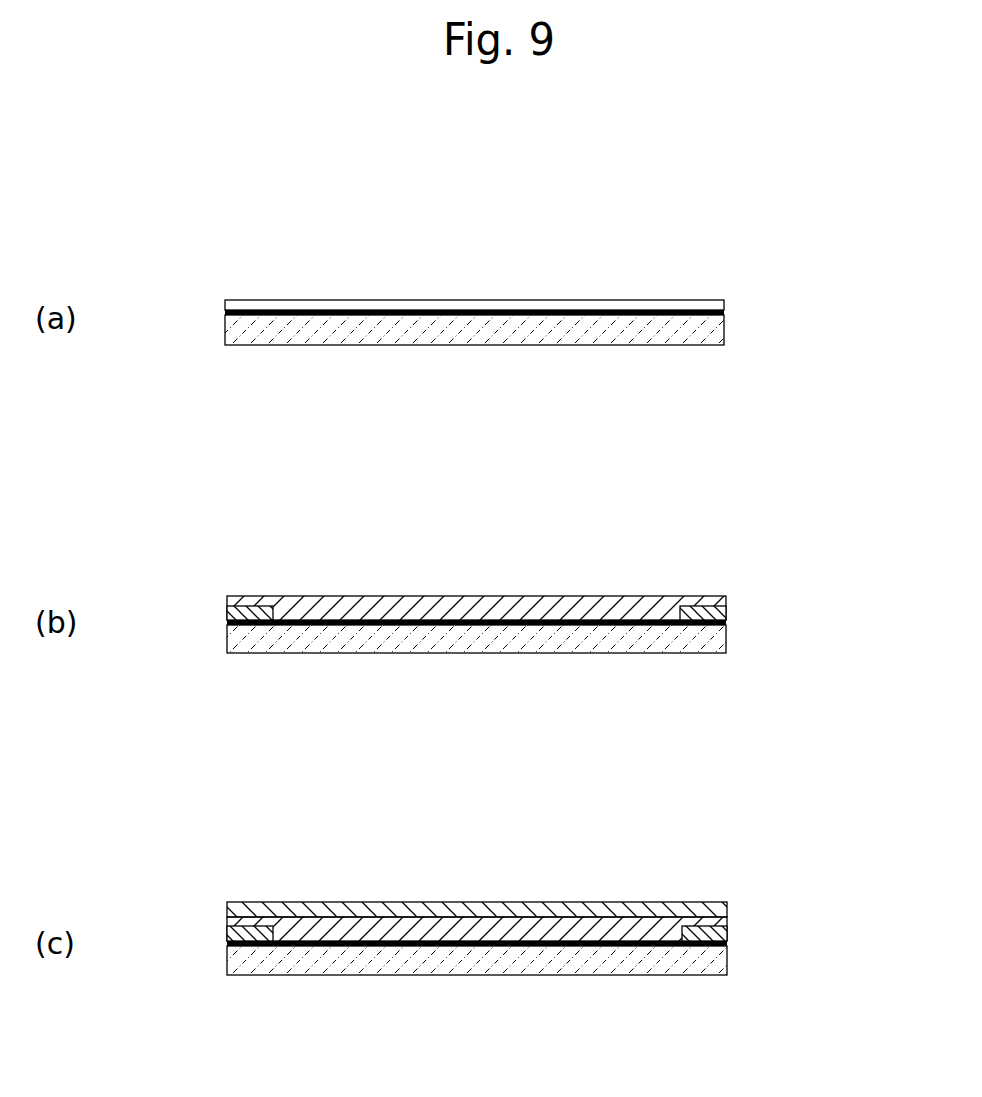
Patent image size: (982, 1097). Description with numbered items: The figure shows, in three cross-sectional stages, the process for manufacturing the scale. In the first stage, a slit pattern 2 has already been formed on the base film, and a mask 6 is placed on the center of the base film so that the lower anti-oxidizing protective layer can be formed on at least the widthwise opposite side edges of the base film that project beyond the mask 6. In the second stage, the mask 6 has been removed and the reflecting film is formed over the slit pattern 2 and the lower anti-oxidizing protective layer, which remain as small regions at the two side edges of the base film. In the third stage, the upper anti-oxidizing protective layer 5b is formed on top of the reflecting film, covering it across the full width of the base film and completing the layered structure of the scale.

The slit pattern 2 is at (442, 312).
The mask 6 is at (522, 303).
The upper anti-oxidizing protective layer 5b is at (666, 902).